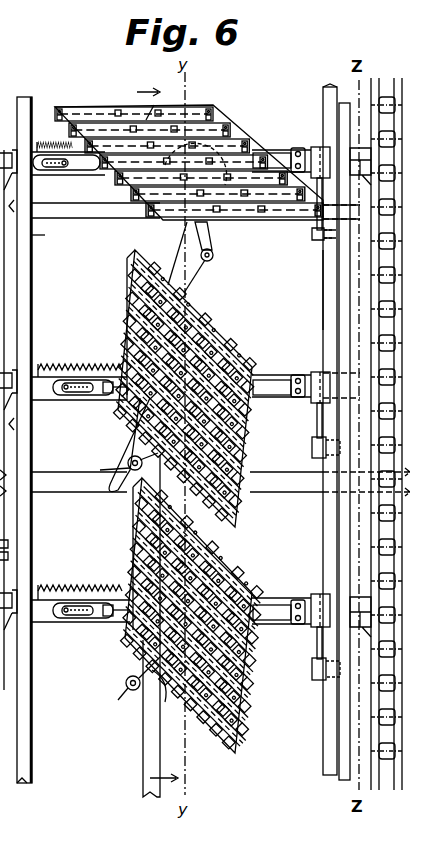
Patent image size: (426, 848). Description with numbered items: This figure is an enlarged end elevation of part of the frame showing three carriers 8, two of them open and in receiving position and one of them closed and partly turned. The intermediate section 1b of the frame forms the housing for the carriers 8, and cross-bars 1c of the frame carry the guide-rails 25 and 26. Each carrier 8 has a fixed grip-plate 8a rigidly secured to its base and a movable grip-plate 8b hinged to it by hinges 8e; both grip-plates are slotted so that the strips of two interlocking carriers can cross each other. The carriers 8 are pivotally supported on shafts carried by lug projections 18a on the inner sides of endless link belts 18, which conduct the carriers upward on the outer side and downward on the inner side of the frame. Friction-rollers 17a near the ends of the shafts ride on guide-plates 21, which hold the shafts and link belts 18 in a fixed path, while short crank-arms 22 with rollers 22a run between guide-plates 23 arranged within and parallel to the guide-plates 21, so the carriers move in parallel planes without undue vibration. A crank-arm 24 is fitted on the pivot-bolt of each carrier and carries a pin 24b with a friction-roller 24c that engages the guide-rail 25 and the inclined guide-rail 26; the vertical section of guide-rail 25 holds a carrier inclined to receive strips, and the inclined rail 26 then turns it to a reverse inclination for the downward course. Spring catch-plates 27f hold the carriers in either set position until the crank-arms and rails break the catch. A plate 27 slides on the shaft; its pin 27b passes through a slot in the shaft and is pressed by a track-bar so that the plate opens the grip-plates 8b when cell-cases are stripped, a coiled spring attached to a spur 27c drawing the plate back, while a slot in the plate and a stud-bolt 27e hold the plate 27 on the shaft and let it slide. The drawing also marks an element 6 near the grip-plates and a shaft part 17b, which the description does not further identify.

The intermediate section 1b is at (46, 235).
The cross-bar 1c is at (57, 512).
The tray 6 is at (226, 340).
The carrier 8 is at (161, 421).
The grip-plate 8a is at (135, 650).
The hinged grip-plate 8b is at (100, 117).
The hinge 8e is at (128, 270).
The cam projection 17a is at (330, 368).
The spring stop 17b is at (50, 364).
The endless link belt 18 is at (396, 266).
The lug projection 18a is at (383, 165).
The guide-plate 21 is at (20, 313).
The crank-arm 22 is at (302, 648).
The roller 22a is at (312, 238).
The guide-plate 23 is at (326, 294).
The crank-arm 24 is at (216, 238).
The pin 24b is at (128, 680).
The friction-roller 24c is at (110, 466).
The guide-rail 25 is at (160, 738).
The inclined guide-rail 26 is at (183, 243).
The plate 27 is at (76, 165).
The pin 27b is at (64, 396).
The spur 27c is at (125, 560).
The stud-bolt 27e is at (79, 366).
The spring catch-plate 27f is at (276, 160).